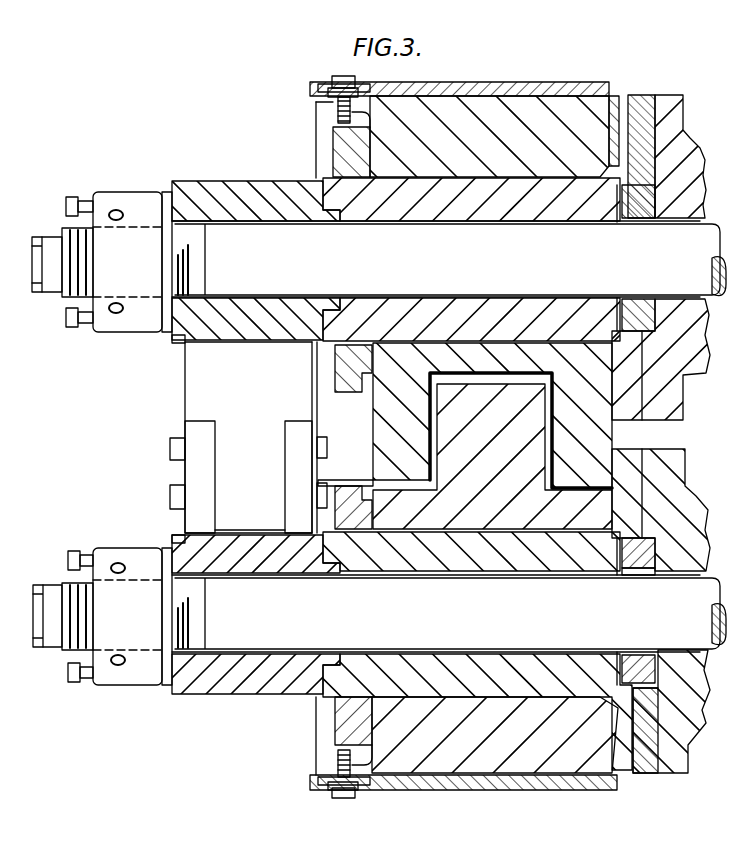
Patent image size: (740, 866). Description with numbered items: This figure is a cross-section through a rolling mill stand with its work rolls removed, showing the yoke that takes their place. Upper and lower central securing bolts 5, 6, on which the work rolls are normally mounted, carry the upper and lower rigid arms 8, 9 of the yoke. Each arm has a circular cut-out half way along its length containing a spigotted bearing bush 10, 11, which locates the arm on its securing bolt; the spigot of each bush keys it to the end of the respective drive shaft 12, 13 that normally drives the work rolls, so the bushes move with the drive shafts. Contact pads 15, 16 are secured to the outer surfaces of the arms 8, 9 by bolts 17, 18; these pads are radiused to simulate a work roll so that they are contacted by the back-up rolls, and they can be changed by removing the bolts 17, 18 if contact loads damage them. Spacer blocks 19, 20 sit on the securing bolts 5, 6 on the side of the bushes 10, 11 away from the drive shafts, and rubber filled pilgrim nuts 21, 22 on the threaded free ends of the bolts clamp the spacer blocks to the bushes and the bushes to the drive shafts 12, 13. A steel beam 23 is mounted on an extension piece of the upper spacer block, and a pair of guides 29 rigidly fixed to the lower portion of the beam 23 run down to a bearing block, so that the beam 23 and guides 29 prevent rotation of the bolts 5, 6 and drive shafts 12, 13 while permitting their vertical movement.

The upper central securing bolt 5 is at (312, 242).
The lower central securing bolt 6 is at (278, 642).
The upper rigid arm 8 is at (533, 118).
The lower rigid arm 9 is at (563, 737).
The spigotted bearing bush 10 is at (548, 187).
The spigotted bearing bush 11 is at (463, 690).
The drive shaft 12 is at (667, 118).
The drive shaft 13 is at (677, 752).
The contact pad 15 is at (490, 90).
The contact pad 16 is at (425, 790).
The securing bolt 17 is at (338, 75).
The securing bolt 18 is at (340, 797).
The spacer block 19 is at (218, 188).
The spacer block 20 is at (222, 683).
The pilgrim nut 21 is at (152, 203).
The pilgrim nut 22 is at (150, 672).
The steel beam 23 is at (207, 373).
The guides 29 is at (297, 482).